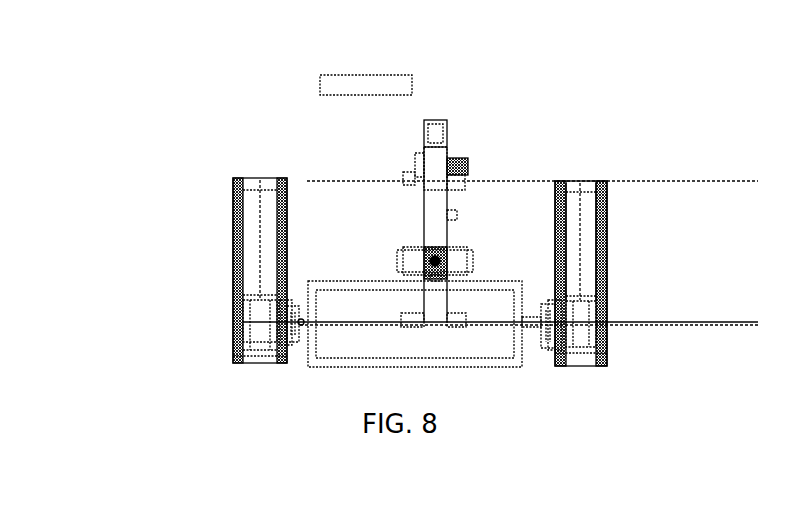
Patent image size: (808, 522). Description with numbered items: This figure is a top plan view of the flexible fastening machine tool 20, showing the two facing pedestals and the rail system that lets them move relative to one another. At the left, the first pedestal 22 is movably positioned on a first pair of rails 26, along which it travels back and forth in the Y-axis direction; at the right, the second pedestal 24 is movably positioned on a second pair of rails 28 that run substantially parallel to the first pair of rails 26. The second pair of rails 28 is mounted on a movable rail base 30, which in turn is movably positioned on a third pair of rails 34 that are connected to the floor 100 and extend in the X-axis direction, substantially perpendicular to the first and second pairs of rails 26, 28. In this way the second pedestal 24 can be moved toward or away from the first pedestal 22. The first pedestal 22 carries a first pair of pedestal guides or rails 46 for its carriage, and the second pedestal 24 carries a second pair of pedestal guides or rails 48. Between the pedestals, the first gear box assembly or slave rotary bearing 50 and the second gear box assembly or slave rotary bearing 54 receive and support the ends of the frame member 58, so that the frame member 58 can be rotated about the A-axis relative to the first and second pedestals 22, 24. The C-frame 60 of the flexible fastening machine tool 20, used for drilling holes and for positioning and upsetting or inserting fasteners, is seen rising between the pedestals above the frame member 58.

The flexible fastening machine tool 20 is at (520, 140).
The first pedestal 22 is at (260, 330).
The second pedestal 24 is at (607, 342).
The first pair of rails 26 is at (284, 200).
The second pair of rails 28 is at (558, 232).
The rail base 30 is at (603, 212).
The third pair of rails 34 is at (683, 181).
The first pair of pedestal guides or rails 46 is at (289, 322).
The second pair of pedestal guides or rails 48 is at (546, 340).
The first gear box assembly or slave rotary bearing 50 is at (284, 305).
The second gear box assembly or slave rotary bearing 54 is at (546, 302).
The frame member 58 is at (340, 283).
The C-frame 60 is at (437, 200).
The floor 100 is at (700, 302).